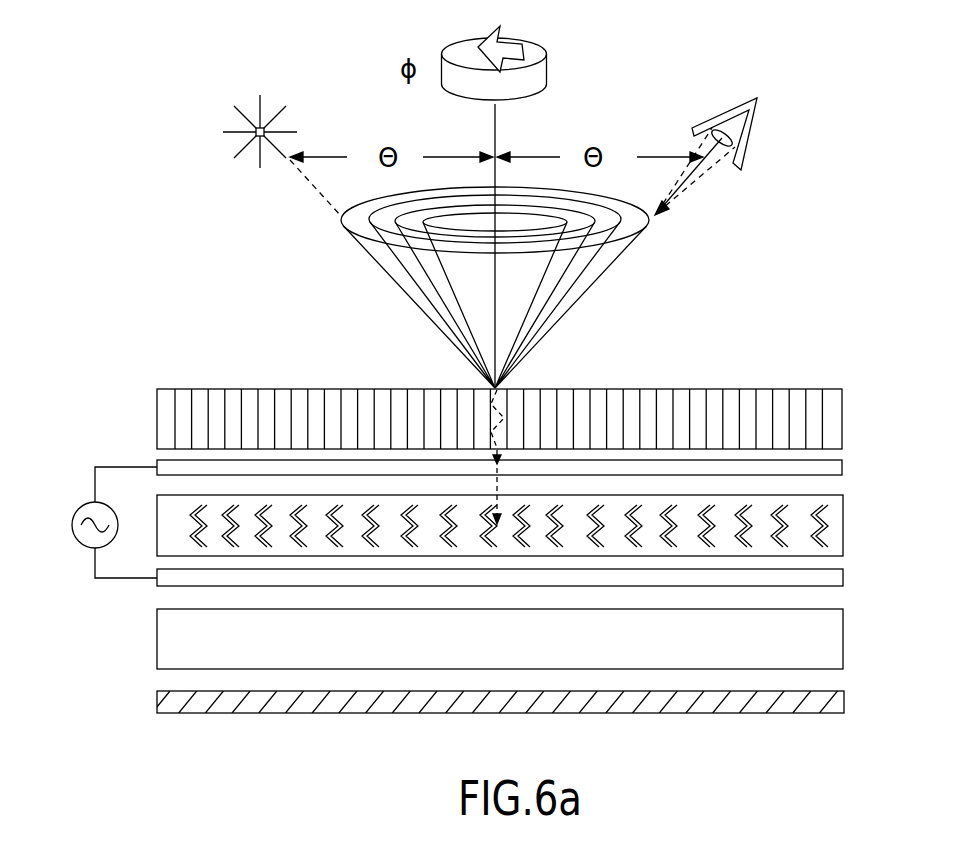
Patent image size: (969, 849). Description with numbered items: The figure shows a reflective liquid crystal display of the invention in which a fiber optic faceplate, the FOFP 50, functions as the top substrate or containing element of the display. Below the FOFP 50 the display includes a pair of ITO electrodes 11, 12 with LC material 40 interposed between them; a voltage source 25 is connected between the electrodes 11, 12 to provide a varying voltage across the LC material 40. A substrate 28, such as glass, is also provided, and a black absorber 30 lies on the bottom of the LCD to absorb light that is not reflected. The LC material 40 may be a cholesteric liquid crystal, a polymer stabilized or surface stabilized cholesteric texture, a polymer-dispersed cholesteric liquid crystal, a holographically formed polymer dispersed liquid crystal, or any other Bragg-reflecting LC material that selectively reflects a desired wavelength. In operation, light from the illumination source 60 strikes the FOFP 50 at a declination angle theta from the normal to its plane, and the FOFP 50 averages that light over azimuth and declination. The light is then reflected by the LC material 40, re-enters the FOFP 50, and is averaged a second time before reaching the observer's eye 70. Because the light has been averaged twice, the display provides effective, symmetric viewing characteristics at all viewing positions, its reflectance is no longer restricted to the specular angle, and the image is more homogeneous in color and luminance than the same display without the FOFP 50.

The illumination source 60 is at (250, 113).
The observer's eye 70 is at (732, 112).
The FOFP 50 is at (157, 400).
The ITO electrode 11 is at (157, 462).
The LC material 40 is at (157, 501).
The voltage source 25 is at (77, 542).
The ITO electrode 12 is at (157, 585).
The substrate 28 is at (157, 650).
The black absorber 30 is at (157, 706).